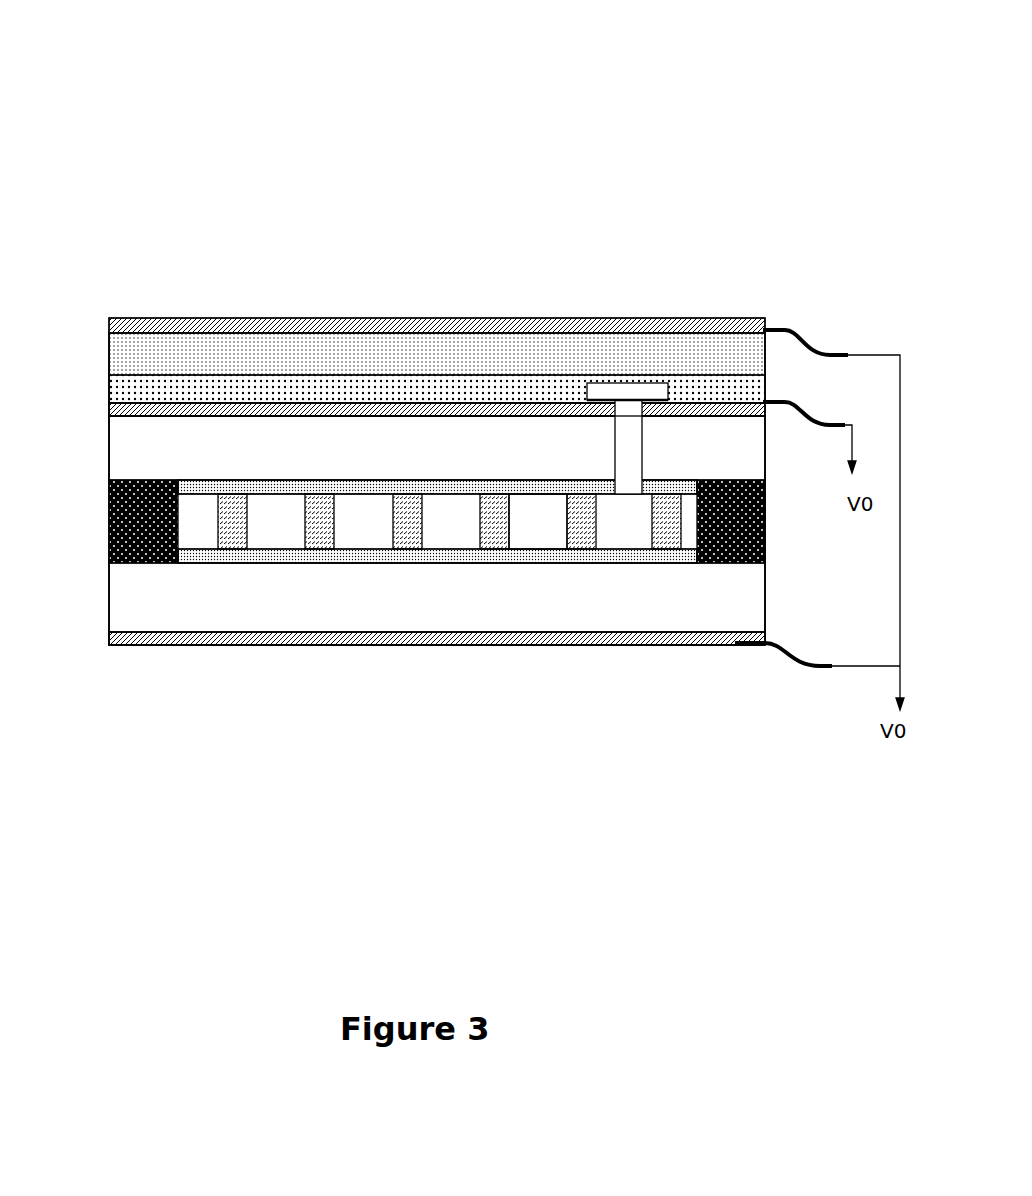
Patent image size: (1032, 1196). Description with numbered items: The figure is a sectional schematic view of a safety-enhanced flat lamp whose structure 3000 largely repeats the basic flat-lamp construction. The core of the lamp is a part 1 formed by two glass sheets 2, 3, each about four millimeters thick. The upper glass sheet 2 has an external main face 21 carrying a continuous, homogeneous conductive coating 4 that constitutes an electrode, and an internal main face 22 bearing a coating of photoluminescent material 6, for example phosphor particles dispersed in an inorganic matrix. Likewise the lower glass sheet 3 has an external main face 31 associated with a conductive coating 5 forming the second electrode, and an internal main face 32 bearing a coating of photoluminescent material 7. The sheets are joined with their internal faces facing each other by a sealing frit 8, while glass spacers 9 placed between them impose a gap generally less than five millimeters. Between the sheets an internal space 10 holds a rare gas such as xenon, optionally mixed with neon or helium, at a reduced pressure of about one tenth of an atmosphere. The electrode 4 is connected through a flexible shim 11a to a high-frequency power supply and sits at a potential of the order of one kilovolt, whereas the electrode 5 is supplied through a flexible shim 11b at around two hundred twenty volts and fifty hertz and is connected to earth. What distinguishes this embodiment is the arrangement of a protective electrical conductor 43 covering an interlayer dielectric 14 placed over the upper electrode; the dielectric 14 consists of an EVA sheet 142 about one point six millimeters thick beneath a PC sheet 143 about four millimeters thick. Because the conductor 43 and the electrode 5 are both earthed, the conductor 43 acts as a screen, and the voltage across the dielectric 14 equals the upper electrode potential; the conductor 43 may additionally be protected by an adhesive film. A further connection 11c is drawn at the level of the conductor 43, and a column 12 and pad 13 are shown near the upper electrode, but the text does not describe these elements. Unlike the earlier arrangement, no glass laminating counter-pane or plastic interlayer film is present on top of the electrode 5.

The structure 3000 is at (650, 106).
The protective electrical conductor 43 is at (746, 322).
The PC sheet 143 is at (232, 349).
The EVA sheet 142 is at (378, 378).
The interlayer dielectric 14 is at (104, 403).
The external main face 21 is at (165, 401).
The conductive coating 4 is at (684, 412).
The glass sheet 2 is at (115, 440).
The sealing frit 8 is at (113, 543).
The coating of photoluminescent material 6 is at (327, 490).
The internal main face 22 is at (457, 496).
The coating of photoluminescent material 7 is at (323, 562).
The internal main face 32 is at (454, 549).
The glass spacers 9 is at (405, 533).
The internal space 10 is at (541, 543).
The conductive column 12 is at (623, 425).
The contact pad 13 is at (608, 388).
The glass sheet 3 is at (123, 605).
The conductive coating 5 is at (578, 637).
The external main face 31 is at (692, 644).
The part 1 is at (780, 402).
The top electrode lead 11c is at (786, 326).
The flexible shim 11a is at (810, 413).
The flexible shim 11b is at (808, 660).